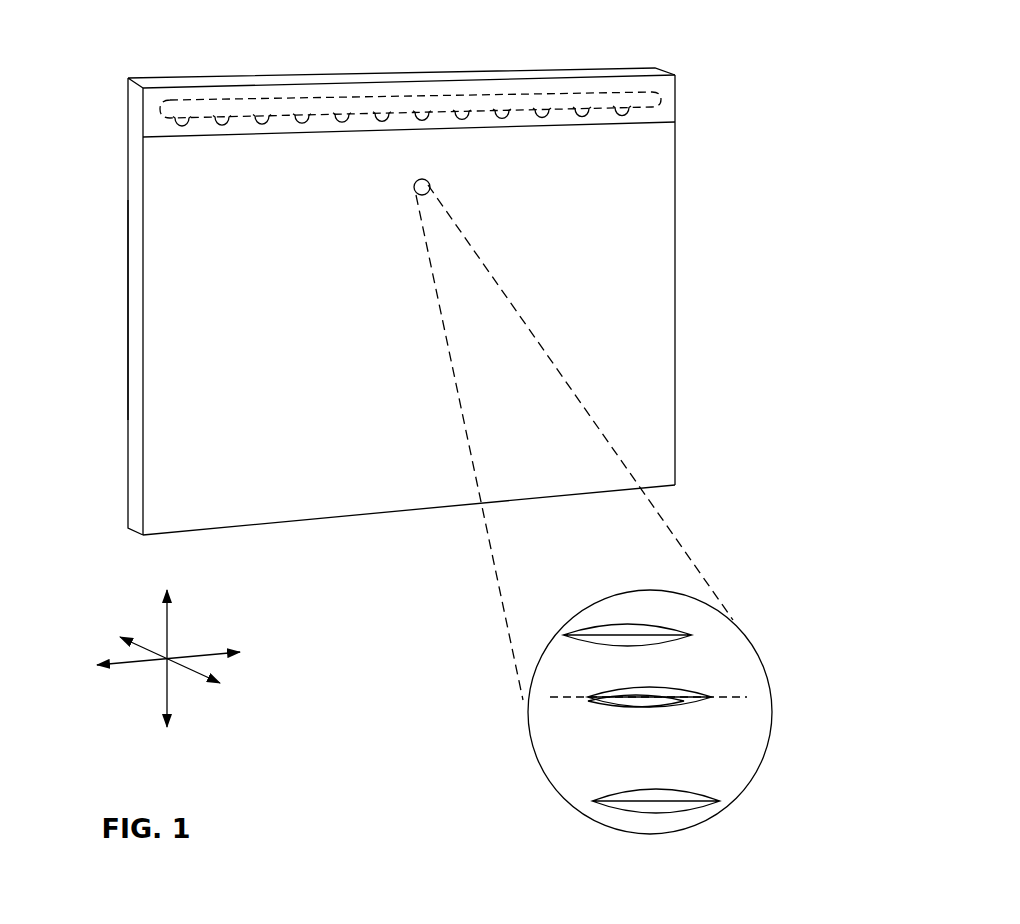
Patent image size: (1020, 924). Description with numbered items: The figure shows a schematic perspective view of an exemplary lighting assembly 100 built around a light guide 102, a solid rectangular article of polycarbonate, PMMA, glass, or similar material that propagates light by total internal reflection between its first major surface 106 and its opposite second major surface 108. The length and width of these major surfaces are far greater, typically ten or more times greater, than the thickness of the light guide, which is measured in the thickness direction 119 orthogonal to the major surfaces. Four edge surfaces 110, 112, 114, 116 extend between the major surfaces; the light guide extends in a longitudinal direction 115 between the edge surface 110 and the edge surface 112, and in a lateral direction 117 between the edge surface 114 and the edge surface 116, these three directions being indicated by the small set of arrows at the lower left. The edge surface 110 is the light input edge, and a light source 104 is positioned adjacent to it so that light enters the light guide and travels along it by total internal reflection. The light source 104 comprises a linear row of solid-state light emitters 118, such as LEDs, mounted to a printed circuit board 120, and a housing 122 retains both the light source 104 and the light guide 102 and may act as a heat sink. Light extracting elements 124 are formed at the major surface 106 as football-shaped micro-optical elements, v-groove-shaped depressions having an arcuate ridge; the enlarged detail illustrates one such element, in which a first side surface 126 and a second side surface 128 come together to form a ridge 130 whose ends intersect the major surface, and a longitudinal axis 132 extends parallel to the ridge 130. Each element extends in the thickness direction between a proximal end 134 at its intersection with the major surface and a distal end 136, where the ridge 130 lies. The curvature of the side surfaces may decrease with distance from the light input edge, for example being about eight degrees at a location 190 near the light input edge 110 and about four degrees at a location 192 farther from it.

The lighting assembly 100 is at (416, 294).
The light guide 102 is at (416, 297).
The light source 104 is at (405, 86).
The first major surface 106 is at (167, 382).
The second major surface 108 is at (127, 302).
The edge surface 110 is at (409, 78).
The edge surface 112 is at (372, 515).
The edge surface 114 is at (138, 240).
The edge surface 116 is at (676, 200).
The lateral direction 117 is at (133, 663).
The longitudinal direction 115 is at (168, 632).
The thickness direction 119 is at (188, 670).
The solid-state light emitters 118 is at (462, 117).
The printed circuit board 120 is at (527, 102).
The housing 122 is at (137, 108).
The light extracting elements 124 is at (604, 680).
The first side surface 126 is at (637, 700).
The second side surface 128 is at (633, 712).
The ridge 130 is at (648, 707).
The longitudinal axis 132 is at (737, 698).
The proximal end 134 is at (668, 681).
The distal end 136 is at (662, 702).
The location 190 is at (384, 198).
The location 192 is at (400, 453).